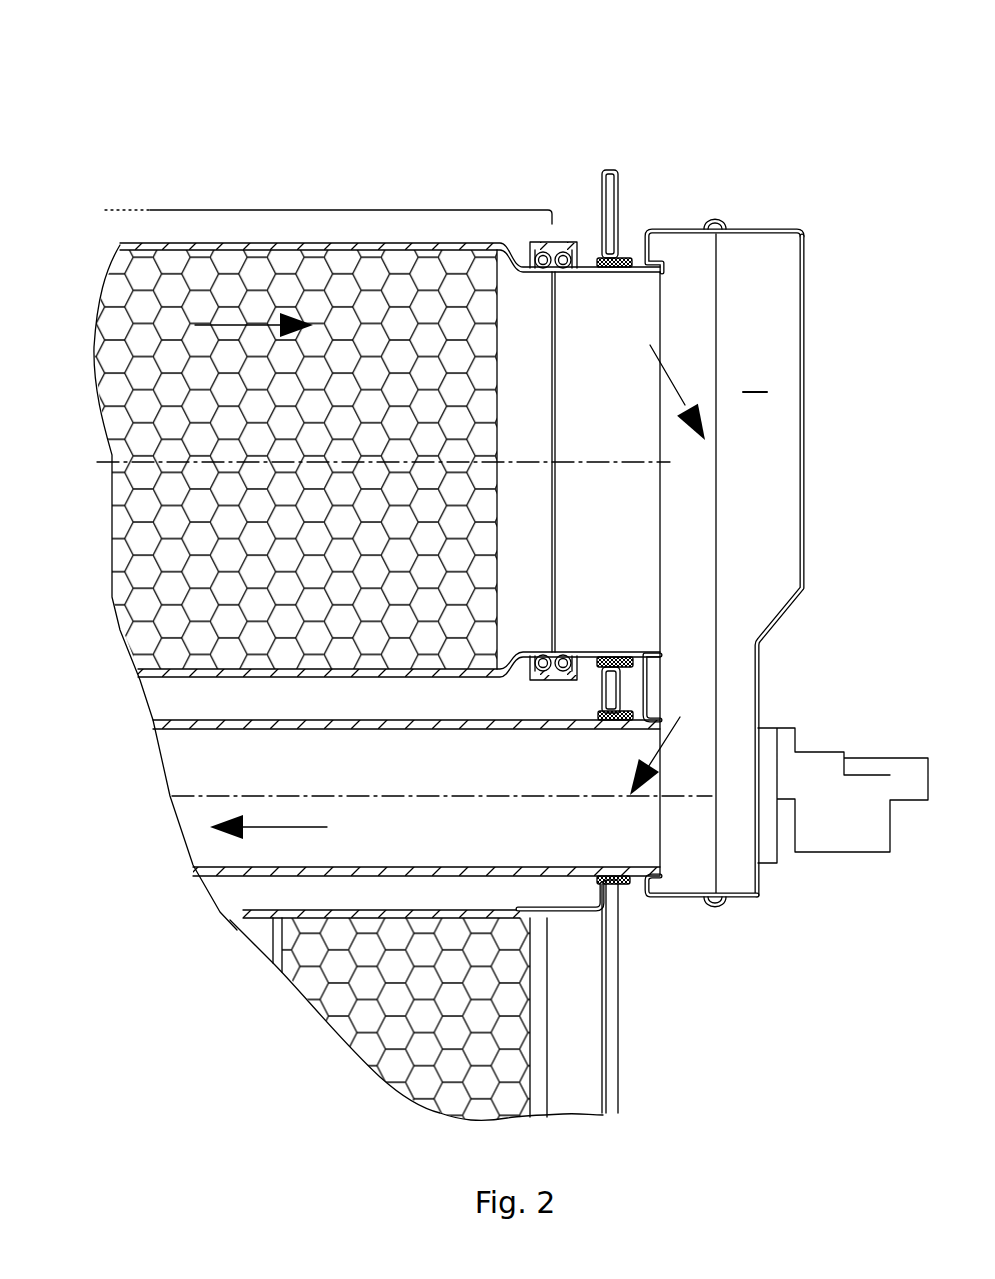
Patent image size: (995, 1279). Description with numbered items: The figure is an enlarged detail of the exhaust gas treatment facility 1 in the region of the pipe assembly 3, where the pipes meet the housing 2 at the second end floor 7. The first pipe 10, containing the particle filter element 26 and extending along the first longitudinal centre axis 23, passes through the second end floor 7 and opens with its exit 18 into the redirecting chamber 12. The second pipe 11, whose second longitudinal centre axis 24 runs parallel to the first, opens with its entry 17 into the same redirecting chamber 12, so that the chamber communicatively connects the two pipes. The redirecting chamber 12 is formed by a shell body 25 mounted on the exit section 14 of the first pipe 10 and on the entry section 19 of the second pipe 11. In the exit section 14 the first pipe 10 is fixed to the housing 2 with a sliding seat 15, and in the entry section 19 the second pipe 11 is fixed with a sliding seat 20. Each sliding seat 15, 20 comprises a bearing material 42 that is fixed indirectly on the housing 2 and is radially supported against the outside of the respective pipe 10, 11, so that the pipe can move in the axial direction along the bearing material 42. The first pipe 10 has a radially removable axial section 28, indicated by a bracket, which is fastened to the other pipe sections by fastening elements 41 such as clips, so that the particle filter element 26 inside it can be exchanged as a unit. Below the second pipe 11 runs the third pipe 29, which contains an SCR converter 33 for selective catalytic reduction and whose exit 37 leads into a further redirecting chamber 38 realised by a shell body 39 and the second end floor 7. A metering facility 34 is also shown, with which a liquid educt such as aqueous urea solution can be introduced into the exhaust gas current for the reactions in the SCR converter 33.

The exhaust gas treatment facility 1 is at (792, 152).
The housing 2 is at (609, 165).
The pipe assembly 3 is at (334, 240).
The second end floor 7 is at (606, 210).
The first pipe 10 is at (220, 240).
The second pipe 11 is at (188, 720).
The redirecting chamber 12 is at (724, 562).
The exit section 14 is at (661, 290).
The sliding seat 15 is at (622, 252).
The entry 17 is at (758, 887).
The exit 18 is at (661, 325).
The entry section 19 is at (622, 722).
The sliding seat 20 is at (632, 892).
The first longitudinal centre axis 23 is at (600, 460).
The second longitudinal centre axis 24 is at (190, 796).
The shell body 25 is at (804, 412).
The particle filter element 26 is at (299, 554).
The radially removable axial section 28 is at (258, 208).
The third pipe 29 is at (238, 908).
The SCR converter 33 is at (415, 1024).
The metering facility 34 is at (874, 750).
The exit 37 is at (614, 1043).
The further redirecting chamber 38 is at (582, 1090).
The shell body 39 is at (572, 915).
The fastening elements 41 is at (548, 240).
The bearing material 42 is at (606, 272).